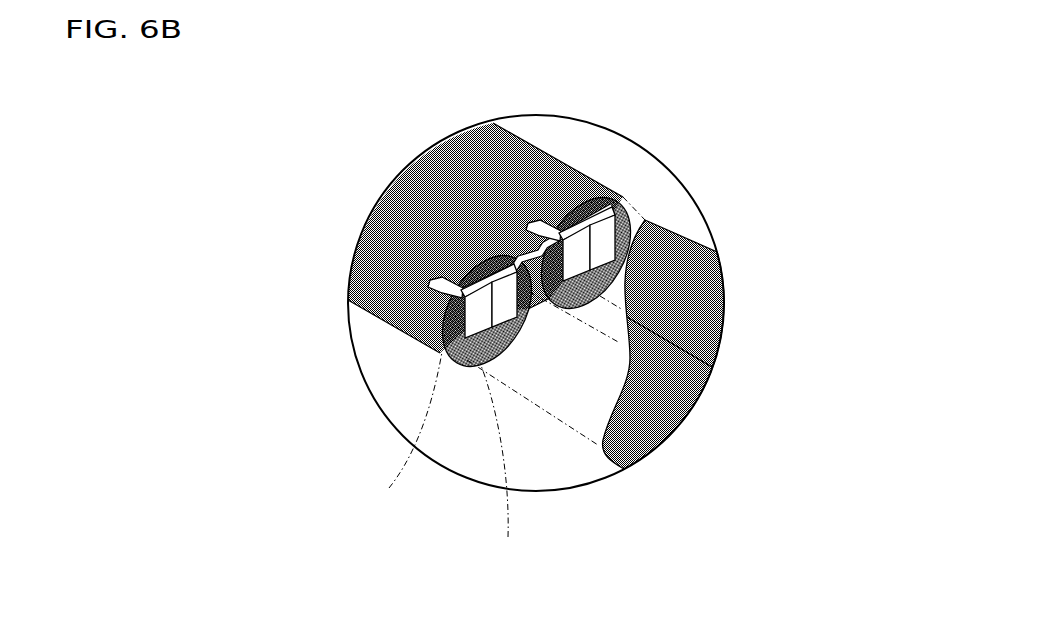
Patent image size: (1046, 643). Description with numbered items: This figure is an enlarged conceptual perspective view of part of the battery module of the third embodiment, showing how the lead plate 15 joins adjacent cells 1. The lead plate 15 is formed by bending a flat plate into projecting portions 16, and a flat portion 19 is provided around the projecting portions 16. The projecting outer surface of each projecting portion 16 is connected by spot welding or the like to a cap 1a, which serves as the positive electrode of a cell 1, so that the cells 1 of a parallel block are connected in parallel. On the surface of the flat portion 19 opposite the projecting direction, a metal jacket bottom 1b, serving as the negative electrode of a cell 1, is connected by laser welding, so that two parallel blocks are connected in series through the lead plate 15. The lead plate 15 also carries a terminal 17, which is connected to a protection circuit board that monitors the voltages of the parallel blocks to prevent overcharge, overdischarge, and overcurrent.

The cell 1 is at (387, 265).
The cap 1a is at (517, 462).
The metal jacket bottom 1b is at (292, 426).
The lead plate 15 is at (481, 242).
The projecting portion 16 is at (440, 352).
The terminal 17 is at (440, 291).
The flat portion 19 is at (529, 250).